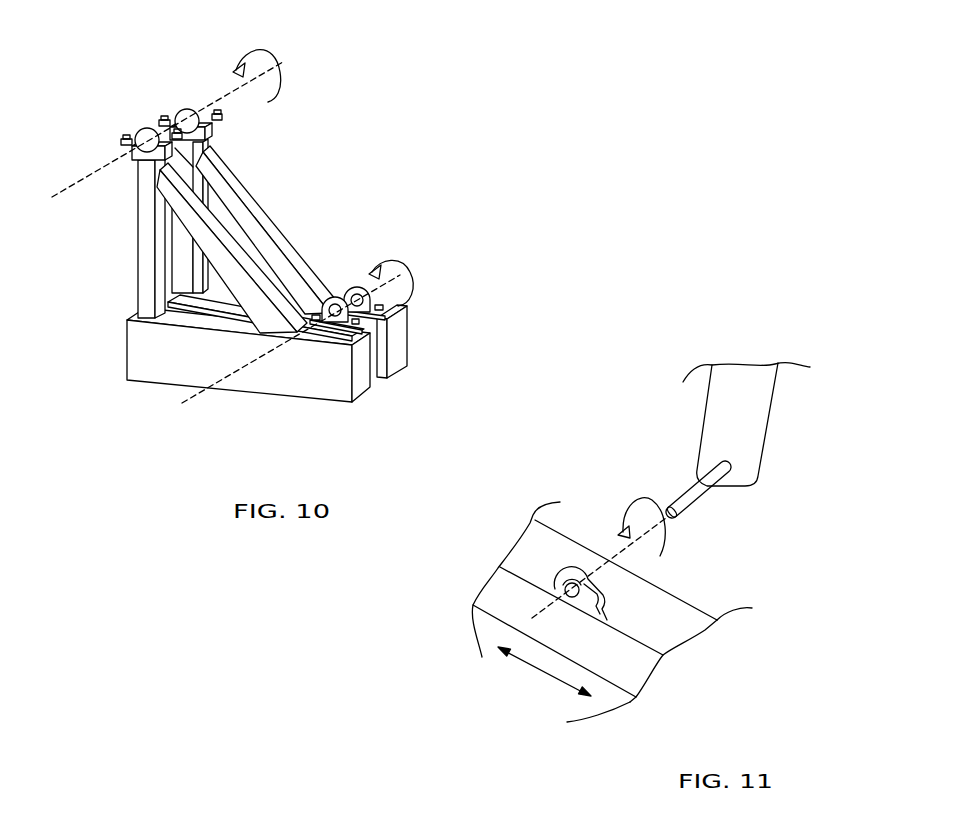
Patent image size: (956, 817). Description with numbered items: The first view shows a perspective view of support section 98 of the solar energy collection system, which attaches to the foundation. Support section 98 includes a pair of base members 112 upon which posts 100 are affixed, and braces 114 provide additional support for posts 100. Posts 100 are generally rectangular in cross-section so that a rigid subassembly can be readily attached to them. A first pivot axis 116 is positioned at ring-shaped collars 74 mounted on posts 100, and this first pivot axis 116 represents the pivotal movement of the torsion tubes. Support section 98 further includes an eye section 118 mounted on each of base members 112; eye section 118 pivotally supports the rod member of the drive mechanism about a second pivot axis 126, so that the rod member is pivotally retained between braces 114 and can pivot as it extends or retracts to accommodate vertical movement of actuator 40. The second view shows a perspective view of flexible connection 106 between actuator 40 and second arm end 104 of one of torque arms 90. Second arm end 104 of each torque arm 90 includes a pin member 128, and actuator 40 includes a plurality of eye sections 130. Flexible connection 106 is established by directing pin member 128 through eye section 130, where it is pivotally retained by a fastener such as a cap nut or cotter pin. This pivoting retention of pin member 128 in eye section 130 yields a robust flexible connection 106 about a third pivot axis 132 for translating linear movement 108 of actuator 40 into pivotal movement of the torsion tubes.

In FIG. 10, the support section 98 is at (269, 254).
In FIG. 10, the ring-shaped collar 74 is at (177, 113).
In FIG. 10, the post 100 is at (210, 150).
In FIG. 10, the base member 112 is at (137, 368).
In FIG. 10, the brace 114 is at (238, 192).
In FIG. 10, the first pivot axis 116 is at (260, 66).
In FIG. 10, the eye section 118 is at (361, 293).
In FIG. 10, the second pivot axis 126 is at (412, 278).
In FIG. 11, the actuator 40 is at (708, 612).
In FIG. 11, the torque arm 90 is at (702, 412).
In FIG. 11, the second arm end 104 is at (750, 400).
In FIG. 11, the flexible connection 106 is at (574, 508).
In FIG. 11, the linear movement 108 is at (522, 657).
In FIG. 11, the pin member 128 is at (700, 496).
In FIG. 11, the eye section 130 is at (555, 589).
In FIG. 11, the third pivot axis 132 is at (648, 498).